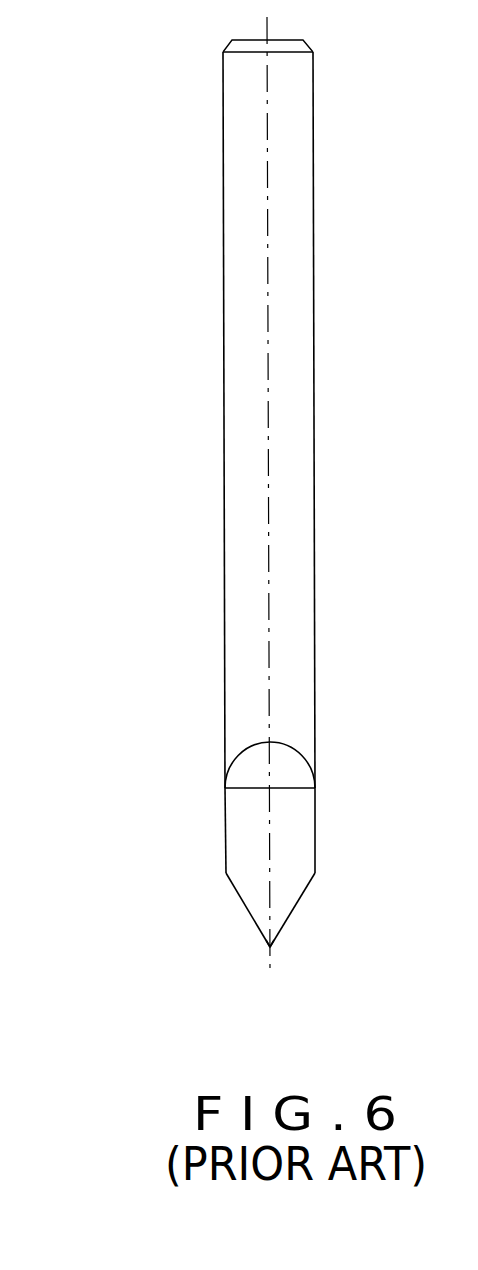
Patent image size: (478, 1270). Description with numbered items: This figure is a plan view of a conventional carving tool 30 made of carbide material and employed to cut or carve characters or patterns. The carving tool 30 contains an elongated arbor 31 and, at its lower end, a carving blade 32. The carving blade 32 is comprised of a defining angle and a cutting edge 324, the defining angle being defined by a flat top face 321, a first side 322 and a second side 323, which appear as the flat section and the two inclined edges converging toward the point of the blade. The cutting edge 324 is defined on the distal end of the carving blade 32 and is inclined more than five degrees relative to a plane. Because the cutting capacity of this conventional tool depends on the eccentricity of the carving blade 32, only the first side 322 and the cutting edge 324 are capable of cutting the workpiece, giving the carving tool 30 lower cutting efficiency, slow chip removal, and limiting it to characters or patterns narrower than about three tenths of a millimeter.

The carving tool 30 is at (240, 528).
The arbor 31 is at (295, 525).
The carving blade 32 is at (271, 869).
The flat top face 321 is at (295, 837).
The first side 322 is at (293, 918).
The second side 323 is at (250, 915).
The cutting edge 324 is at (271, 947).